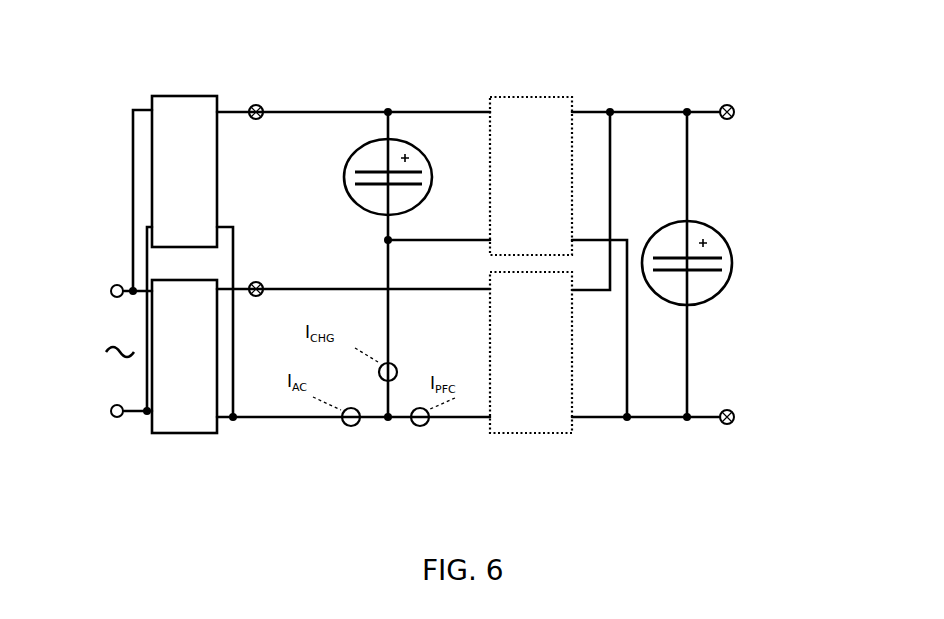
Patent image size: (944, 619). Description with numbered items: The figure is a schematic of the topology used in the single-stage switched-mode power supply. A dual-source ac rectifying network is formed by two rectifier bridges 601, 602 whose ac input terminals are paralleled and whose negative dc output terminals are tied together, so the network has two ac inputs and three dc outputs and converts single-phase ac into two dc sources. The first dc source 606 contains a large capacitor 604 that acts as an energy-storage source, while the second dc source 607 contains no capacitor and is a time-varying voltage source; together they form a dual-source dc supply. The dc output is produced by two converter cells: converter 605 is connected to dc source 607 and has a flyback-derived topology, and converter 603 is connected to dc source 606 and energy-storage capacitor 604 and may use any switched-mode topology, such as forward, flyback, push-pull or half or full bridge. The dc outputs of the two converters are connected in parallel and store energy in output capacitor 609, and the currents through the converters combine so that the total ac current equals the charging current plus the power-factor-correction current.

The rectifier bridge 601 is at (188, 96).
The rectifier bridge 602 is at (182, 433).
The converter cell 603 is at (533, 97).
The energy-storage capacitor 604 is at (395, 133).
The converter cell 605 is at (515, 433).
The dc source 606 is at (259, 100).
The dc source 607 is at (253, 277).
The output capacitor 609 is at (710, 220).